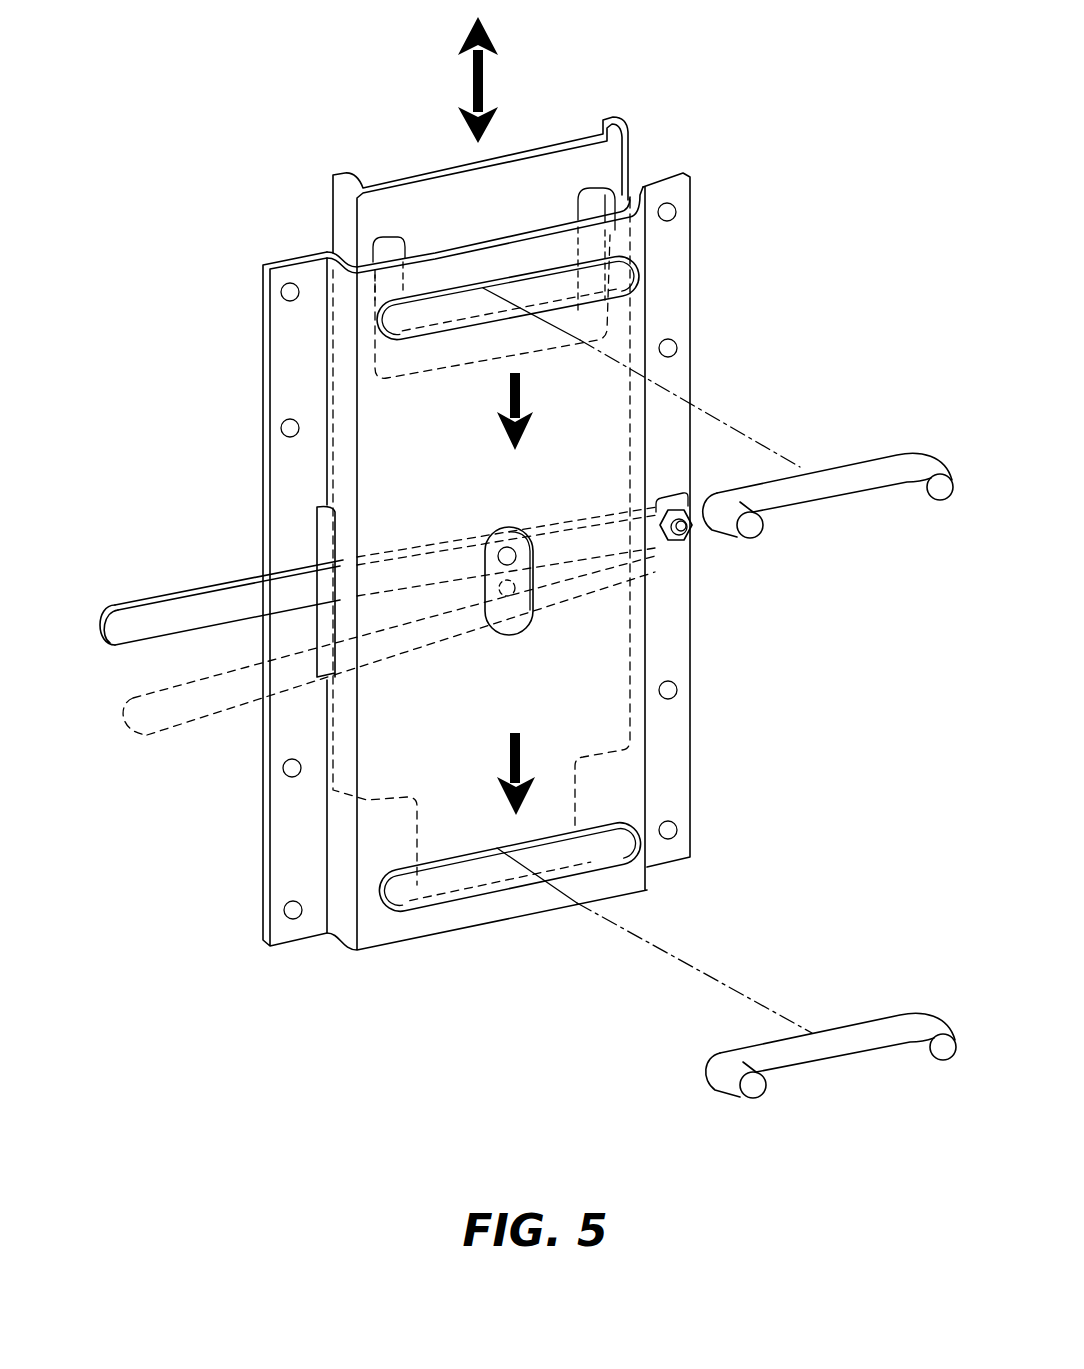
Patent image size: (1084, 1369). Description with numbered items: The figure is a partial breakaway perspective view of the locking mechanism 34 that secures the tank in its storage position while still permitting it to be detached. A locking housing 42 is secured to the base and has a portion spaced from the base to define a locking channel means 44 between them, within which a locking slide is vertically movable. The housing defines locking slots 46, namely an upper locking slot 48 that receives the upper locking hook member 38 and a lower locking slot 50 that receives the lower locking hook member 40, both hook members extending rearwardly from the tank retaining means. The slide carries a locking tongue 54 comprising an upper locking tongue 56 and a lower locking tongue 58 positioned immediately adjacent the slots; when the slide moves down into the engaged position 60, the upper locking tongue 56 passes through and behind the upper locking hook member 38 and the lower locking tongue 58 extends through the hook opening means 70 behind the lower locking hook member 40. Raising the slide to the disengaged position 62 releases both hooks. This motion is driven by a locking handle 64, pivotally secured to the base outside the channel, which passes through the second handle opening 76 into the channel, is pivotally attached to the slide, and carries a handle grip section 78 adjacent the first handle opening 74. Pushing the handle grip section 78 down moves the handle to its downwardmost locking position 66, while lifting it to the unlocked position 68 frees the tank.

The locking mechanism 34 is at (244, 266).
The upper locking hook member 38 is at (847, 468).
The lower locking hook member 40 is at (889, 1027).
The locking housing 42 is at (262, 313).
The locking channel means 44 is at (640, 190).
The locking slots 46 is at (383, 325).
The upper locking slot 48 is at (383, 330).
The lower locking slot 50 is at (387, 893).
The locking tongue 54 is at (557, 225).
The upper locking tongue 56 is at (437, 273).
The lower locking tongue 58 is at (478, 835).
The engaged position 60 is at (575, 305).
The disengaged position 62 is at (463, 307).
The locking handle 64 is at (660, 506).
The downwardmost locking position 66 is at (175, 720).
The unlocked position 68 is at (115, 606).
The hook opening means 70 is at (830, 530).
The first handle opening 74 is at (633, 572).
The second handle opening 76 is at (317, 525).
The handle grip section 78 is at (208, 620).